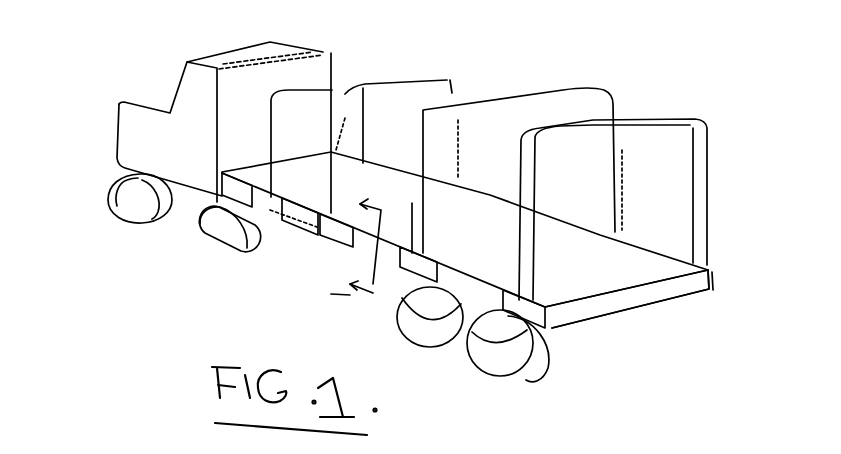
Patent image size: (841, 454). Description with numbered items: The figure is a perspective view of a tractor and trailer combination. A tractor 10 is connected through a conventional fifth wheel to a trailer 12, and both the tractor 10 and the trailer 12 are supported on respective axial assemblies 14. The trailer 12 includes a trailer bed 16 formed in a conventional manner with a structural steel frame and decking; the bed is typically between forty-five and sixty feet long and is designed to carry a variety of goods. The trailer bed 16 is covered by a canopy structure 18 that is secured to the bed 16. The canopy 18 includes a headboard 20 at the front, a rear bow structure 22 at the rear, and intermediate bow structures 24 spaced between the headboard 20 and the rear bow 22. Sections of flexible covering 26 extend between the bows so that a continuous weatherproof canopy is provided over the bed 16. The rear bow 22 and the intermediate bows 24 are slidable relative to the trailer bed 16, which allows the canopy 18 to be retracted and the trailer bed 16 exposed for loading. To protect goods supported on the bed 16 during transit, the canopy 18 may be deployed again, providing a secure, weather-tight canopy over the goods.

The tractor 10 is at (409, 216).
The trailer 12 is at (633, 333).
The axial assemblies 14 is at (112, 207).
The trailer bed 16 is at (713, 273).
The canopy structure 18 is at (528, 158).
The headboard 20 is at (332, 60).
The rear bow structure 22 is at (707, 190).
The intermediate bow structures 24 is at (336, 88).
The flexible covering 26 is at (510, 80).